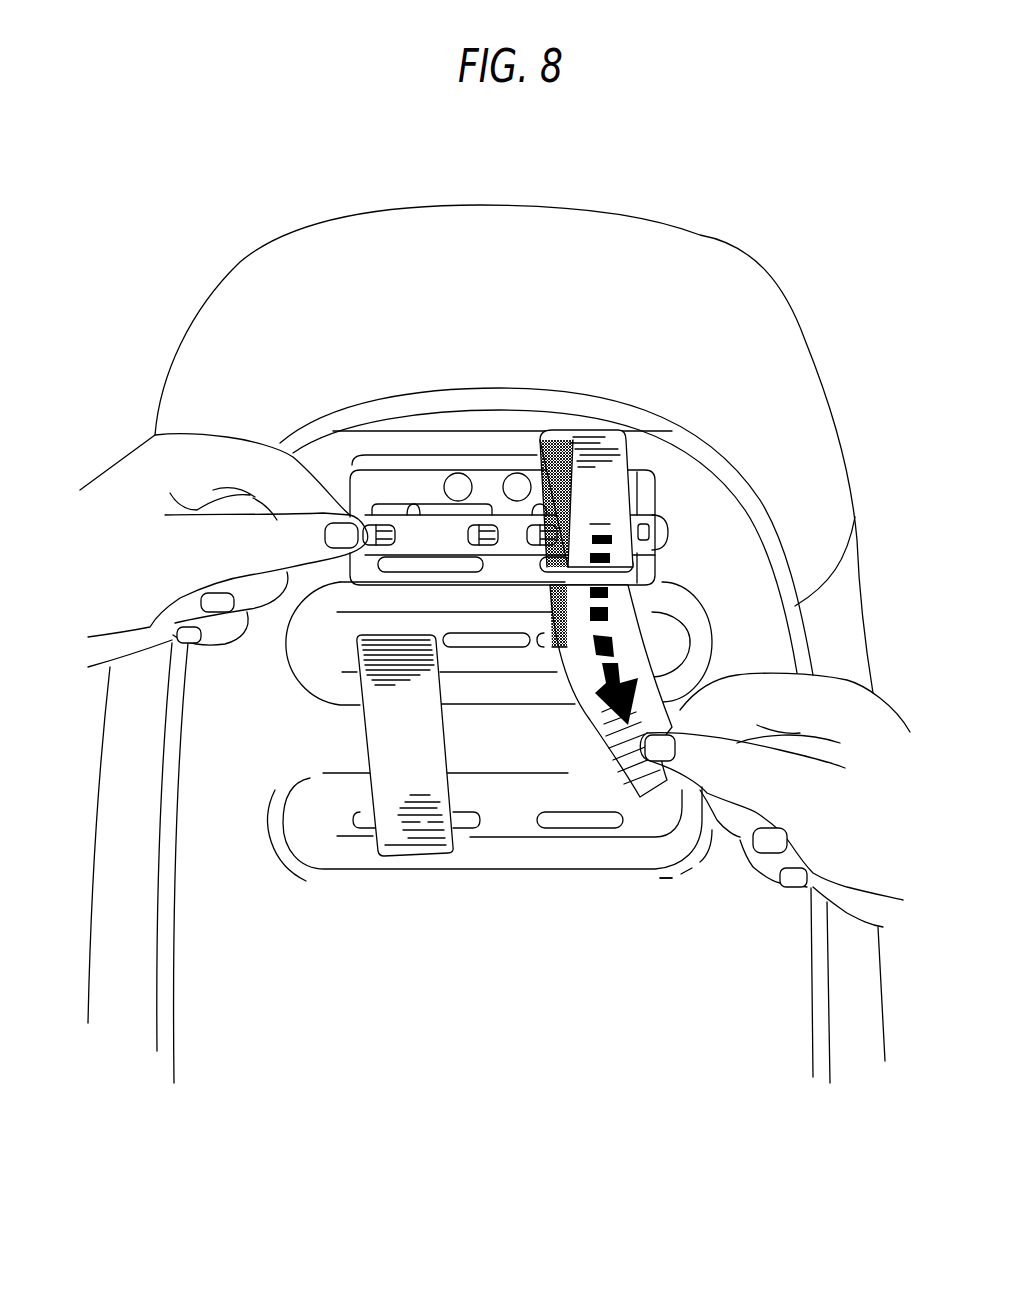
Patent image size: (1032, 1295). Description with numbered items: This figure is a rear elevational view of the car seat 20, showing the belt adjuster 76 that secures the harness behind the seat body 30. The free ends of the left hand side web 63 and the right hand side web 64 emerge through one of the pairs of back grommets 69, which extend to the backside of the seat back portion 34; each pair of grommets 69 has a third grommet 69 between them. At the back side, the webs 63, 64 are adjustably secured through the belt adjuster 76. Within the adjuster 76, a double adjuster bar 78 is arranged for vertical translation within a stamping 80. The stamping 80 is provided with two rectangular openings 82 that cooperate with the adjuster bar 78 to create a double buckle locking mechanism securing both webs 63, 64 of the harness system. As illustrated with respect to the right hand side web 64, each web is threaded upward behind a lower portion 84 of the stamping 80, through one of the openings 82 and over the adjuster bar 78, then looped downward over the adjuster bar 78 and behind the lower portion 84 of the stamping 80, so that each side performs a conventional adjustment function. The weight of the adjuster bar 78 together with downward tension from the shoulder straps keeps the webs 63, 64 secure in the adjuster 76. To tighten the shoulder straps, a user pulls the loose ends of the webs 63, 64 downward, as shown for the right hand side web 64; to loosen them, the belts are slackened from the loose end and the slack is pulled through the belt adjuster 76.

The car seat 20 is at (777, 147).
The seat body 30 is at (293, 347).
The seat back portion 34 is at (507, 745).
The left hand side (LHS) web 63 is at (383, 727).
The right hand side (RHS) web 64 is at (628, 652).
The back grommets 69 is at (352, 638).
The belt adjuster 76 is at (680, 508).
The double adjuster bar 78 is at (443, 533).
The stamping 80 is at (387, 487).
The rectangular openings 82 is at (407, 507).
The lower portion of the stamping 84 is at (637, 573).